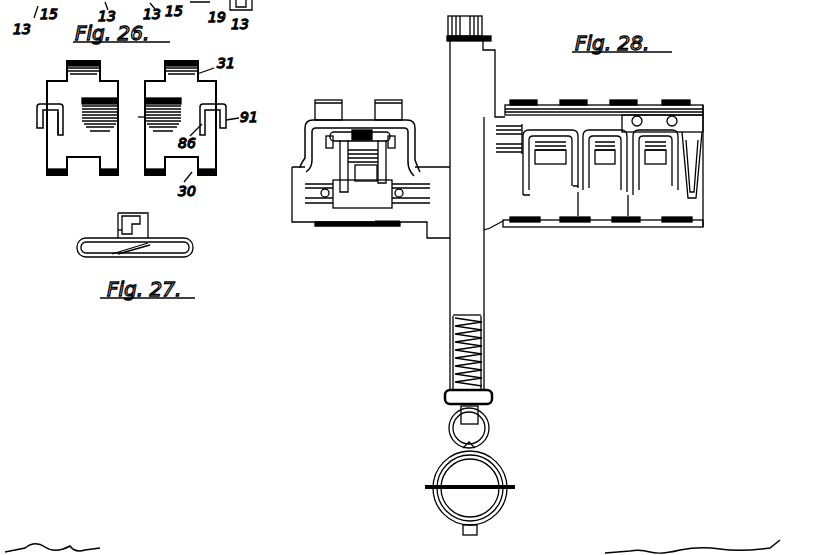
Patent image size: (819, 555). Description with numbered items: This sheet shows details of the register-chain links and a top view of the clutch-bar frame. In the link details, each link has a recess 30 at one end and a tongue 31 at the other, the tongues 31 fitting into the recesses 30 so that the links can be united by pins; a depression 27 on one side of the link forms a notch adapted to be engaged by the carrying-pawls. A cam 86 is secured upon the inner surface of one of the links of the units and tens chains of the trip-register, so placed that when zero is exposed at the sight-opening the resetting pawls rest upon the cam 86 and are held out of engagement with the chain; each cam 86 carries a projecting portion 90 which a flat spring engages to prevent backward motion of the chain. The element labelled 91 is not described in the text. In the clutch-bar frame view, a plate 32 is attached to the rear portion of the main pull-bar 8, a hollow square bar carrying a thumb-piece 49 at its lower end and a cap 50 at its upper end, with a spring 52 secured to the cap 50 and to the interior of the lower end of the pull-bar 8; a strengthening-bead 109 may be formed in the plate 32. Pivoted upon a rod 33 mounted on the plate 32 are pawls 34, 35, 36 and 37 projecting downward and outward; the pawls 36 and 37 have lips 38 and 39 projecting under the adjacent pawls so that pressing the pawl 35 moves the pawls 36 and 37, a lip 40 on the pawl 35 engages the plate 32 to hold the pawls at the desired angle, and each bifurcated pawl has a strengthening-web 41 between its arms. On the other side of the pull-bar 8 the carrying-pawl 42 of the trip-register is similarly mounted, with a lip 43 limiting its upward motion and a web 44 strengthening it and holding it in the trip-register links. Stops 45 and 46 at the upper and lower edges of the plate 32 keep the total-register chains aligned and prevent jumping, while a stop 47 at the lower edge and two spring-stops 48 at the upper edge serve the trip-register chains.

In FIG. 26, the recess 30 is at (86, 172).
In FIG. 26, the tongue 31 is at (90, 79).
In FIG. 26, the depression 27 is at (118, 117).
In FIG. 26, the hook 91 is at (38, 112).
In FIG. 26, the cam 86 is at (64, 128).
In FIG. 27, the cam 86 is at (148, 226).
In FIG. 27, the projecting portion 90 is at (118, 227).
In FIG. 28, the cap 50 is at (448, 38).
In FIG. 28, the main pull-bar 8 is at (485, 315).
In FIG. 28, the spring 52 is at (486, 356).
In FIG. 28, the thumb-piece 49 is at (490, 470).
In FIG. 28, the plate 32 is at (292, 213).
In FIG. 28, the strengthening-bead 109 is at (308, 150).
In FIG. 28, the spring-stops 48 is at (328, 103).
In FIG. 28, the carrying-pawl 42 is at (355, 130).
In FIG. 28, the lip 43 is at (376, 130).
In FIG. 28, the web 44 is at (352, 185).
In FIG. 28, the stop 47 is at (394, 226).
In FIG. 28, the stops 45 is at (520, 100).
In FIG. 28, the lip 40 is at (698, 128).
In FIG. 28, the stops 46 is at (526, 228).
In FIG. 28, the pawl 37 is at (543, 130).
In FIG. 28, the strengthening-web 41 is at (551, 166).
In FIG. 28, the pawl 36 is at (593, 130).
In FIG. 28, the pawl 35 is at (652, 130).
In FIG. 28, the pawl 34 is at (702, 172).
In FIG. 28, the rod 33 is at (510, 152).
In FIG. 28, the lip 38 is at (628, 222).
In FIG. 28, the lip 39 is at (578, 222).